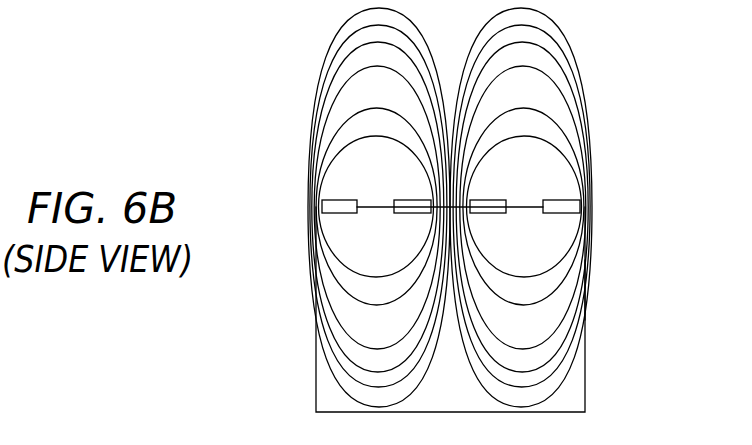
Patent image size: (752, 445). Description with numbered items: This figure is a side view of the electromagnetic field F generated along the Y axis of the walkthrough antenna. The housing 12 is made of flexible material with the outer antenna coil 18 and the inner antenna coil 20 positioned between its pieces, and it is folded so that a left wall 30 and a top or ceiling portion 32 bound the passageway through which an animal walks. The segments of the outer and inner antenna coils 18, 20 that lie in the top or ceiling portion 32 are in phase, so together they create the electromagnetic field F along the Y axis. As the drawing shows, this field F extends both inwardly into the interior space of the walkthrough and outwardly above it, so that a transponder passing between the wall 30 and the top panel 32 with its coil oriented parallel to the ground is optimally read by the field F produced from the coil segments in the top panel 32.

The housing 12 is at (588, 288).
The outer antenna coil 18 is at (326, 197).
The inner antenna coil 20 is at (393, 213).
The left wall 30 is at (324, 392).
The top or ceiling portion 32 is at (373, 203).
The electromagnetic field F is at (565, 36).